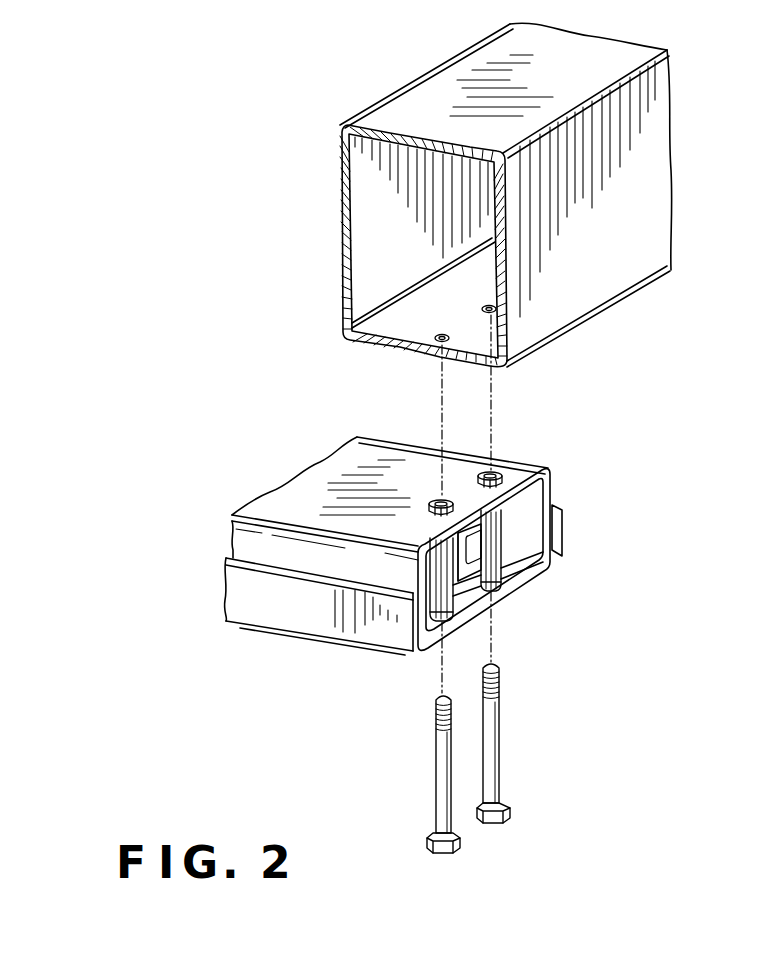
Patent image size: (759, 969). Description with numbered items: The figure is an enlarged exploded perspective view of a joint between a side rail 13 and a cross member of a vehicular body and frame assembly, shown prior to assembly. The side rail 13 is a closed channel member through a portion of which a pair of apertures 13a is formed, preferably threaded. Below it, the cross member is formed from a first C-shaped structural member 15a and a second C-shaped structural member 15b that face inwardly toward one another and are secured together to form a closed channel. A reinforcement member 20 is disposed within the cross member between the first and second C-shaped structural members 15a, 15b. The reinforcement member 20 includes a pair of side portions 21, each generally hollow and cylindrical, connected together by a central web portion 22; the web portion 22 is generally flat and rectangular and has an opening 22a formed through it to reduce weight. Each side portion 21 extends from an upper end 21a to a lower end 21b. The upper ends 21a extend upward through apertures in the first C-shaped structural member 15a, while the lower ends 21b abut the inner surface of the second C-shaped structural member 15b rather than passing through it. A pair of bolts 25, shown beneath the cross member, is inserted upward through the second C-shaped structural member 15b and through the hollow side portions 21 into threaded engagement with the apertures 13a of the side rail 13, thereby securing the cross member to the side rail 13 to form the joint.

The side rail 13 is at (613, 303).
The apertures 13a is at (484, 308).
The first C-shaped structural member 15a is at (535, 467).
The second C-shaped structural member 15b is at (232, 593).
The reinforcement member 20 is at (514, 524).
The side portions 21 is at (505, 552).
The upper ends 21a is at (435, 503).
The lower ends 21b is at (505, 590).
The central web portion 22 is at (467, 578).
The opening 22a is at (479, 543).
The bolts 25 is at (438, 768).